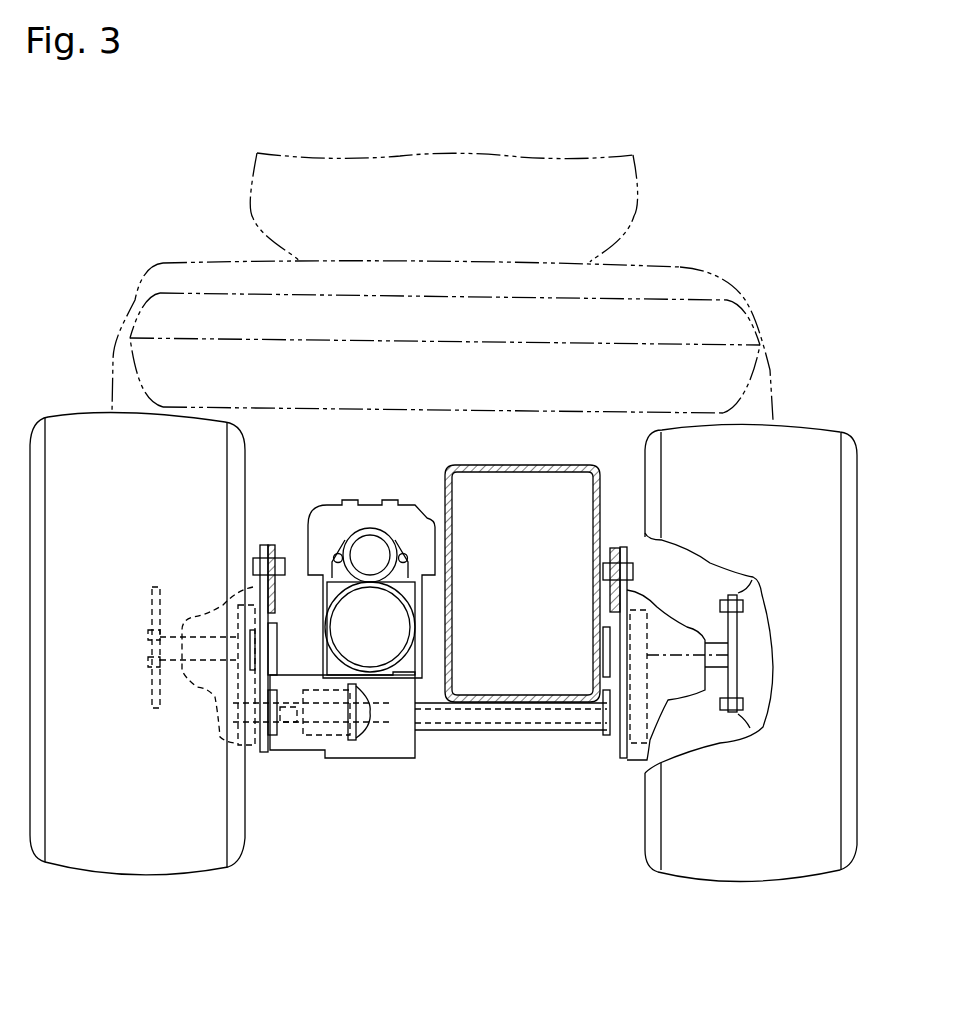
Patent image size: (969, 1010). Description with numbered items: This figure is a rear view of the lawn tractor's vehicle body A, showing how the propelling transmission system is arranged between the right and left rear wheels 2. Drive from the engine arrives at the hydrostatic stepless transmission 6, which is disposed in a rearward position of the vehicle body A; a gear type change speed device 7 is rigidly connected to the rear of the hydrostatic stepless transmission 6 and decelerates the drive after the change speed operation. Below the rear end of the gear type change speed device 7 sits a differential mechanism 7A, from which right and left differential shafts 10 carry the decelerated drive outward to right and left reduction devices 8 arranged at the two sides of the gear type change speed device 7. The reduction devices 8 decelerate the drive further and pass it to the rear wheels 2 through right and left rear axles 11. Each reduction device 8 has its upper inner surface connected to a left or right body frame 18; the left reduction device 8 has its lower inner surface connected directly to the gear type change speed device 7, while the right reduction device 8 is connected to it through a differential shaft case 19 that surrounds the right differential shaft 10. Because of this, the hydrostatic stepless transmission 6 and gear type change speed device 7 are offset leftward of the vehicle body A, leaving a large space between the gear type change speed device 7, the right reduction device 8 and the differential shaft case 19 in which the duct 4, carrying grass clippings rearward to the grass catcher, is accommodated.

The vehicle body A is at (683, 265).
The rear wheels 2 is at (238, 822).
The duct 4 is at (447, 470).
The hydrostatic stepless transmission 6 is at (318, 528).
The gear type change speed device 7 is at (410, 687).
The differential mechanism 7A is at (365, 730).
The reduction devices 8 is at (200, 687).
The differential shafts 10 is at (288, 723).
The rear axles 11 is at (203, 637).
The body frames 18 is at (275, 548).
The differential shaft case 19 is at (502, 732).